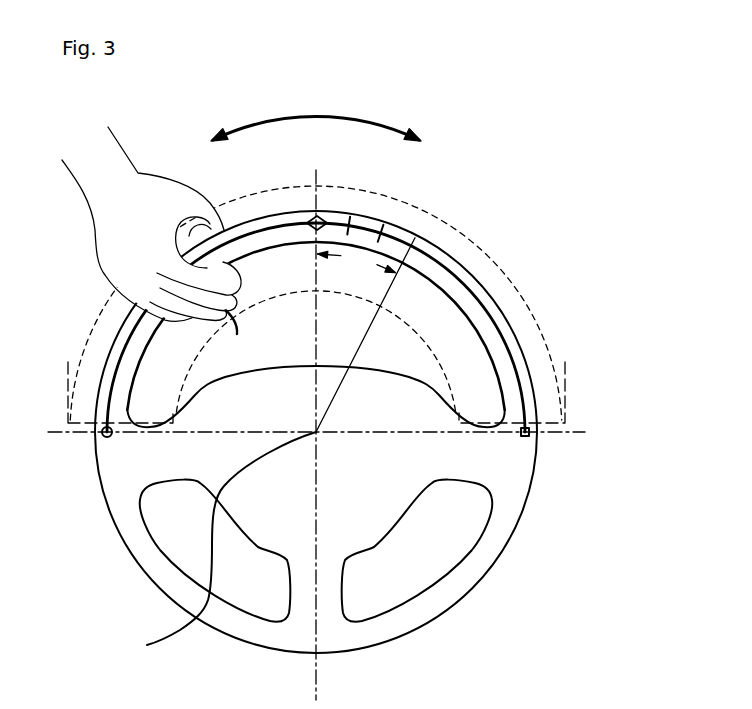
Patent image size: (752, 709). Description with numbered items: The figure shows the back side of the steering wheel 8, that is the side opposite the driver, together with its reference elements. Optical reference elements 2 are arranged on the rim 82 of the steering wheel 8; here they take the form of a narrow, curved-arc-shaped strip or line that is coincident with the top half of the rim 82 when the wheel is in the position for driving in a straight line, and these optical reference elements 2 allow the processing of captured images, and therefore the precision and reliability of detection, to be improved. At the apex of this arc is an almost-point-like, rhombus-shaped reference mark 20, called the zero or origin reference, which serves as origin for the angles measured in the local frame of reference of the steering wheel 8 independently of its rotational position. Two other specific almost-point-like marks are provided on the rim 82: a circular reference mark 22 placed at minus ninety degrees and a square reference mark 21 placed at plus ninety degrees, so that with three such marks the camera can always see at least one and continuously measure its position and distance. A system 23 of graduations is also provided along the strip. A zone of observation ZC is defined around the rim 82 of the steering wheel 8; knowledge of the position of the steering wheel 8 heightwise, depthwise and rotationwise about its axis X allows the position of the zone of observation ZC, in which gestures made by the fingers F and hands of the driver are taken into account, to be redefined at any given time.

The optical reference elements 2 is at (481, 294).
The steering wheel 8 is at (179, 224).
The rim 82 is at (297, 209).
The reference mark 20 is at (322, 220).
The square reference mark 21 is at (529, 437).
The circular reference mark 22 is at (104, 436).
The system of graduations 23 is at (450, 228).
The zone of observation ZC is at (541, 306).
The fingers F is at (221, 322).
The axis X is at (221, 550).